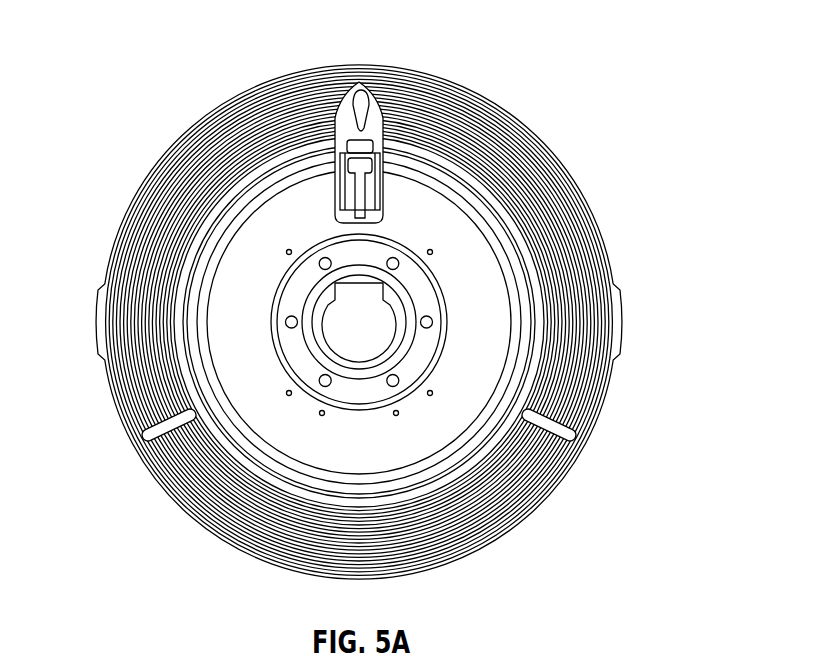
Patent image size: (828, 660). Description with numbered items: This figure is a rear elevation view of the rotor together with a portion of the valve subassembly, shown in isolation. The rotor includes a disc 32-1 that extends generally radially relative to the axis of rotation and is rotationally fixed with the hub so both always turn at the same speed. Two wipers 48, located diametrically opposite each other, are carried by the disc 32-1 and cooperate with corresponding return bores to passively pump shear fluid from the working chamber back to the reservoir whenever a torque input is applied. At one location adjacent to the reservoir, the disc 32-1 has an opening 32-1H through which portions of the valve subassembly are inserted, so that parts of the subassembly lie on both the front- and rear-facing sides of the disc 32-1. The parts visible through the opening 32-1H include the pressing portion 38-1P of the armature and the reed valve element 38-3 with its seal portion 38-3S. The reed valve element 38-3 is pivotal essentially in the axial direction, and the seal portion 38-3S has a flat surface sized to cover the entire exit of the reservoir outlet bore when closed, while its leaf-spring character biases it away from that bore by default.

The wiper 48 is at (97, 320).
The disc 32-1 is at (252, 95).
The opening 32-1H is at (337, 211).
The reed valve element 38-3 is at (379, 197).
The seal portion 38-3S is at (363, 132).
The pressing portion 38-1P is at (337, 212).